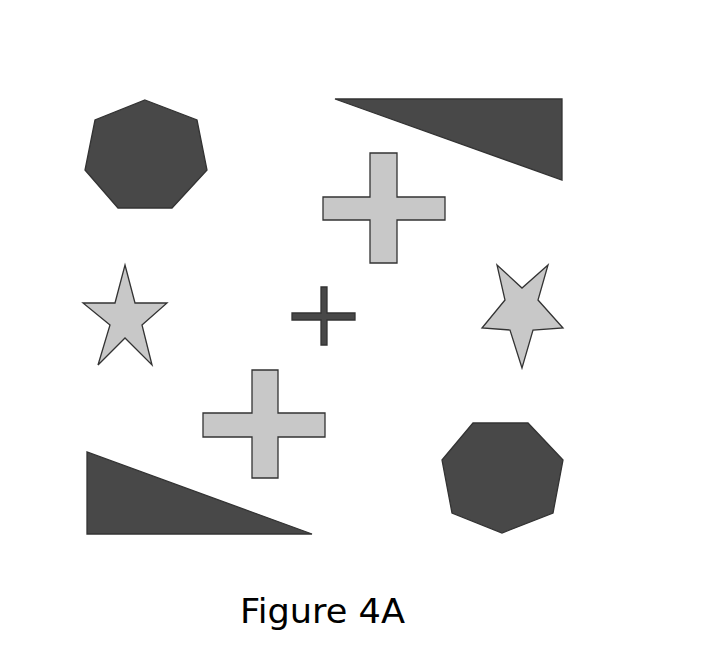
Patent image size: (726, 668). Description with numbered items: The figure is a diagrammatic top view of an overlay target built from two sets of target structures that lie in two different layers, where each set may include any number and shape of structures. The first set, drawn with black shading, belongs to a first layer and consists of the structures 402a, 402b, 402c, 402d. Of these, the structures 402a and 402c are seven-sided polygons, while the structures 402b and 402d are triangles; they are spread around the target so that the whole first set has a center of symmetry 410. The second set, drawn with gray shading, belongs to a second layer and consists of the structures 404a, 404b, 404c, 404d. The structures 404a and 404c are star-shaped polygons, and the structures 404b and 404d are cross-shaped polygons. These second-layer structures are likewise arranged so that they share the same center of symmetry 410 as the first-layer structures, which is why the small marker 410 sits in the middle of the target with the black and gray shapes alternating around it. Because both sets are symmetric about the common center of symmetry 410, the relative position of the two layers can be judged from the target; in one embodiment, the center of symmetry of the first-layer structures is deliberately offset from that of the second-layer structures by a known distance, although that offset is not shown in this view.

The first layer structure 402a is at (135, 147).
The first layer structure 402b is at (148, 527).
The first layer structure 402c is at (530, 437).
The first layer structure 402d is at (474, 110).
The second layer structure 404a is at (123, 342).
The second layer structure 404b is at (305, 420).
The second layer structure 404c is at (532, 310).
The second layer structure 404d is at (417, 212).
The center of symmetry 410 is at (342, 313).